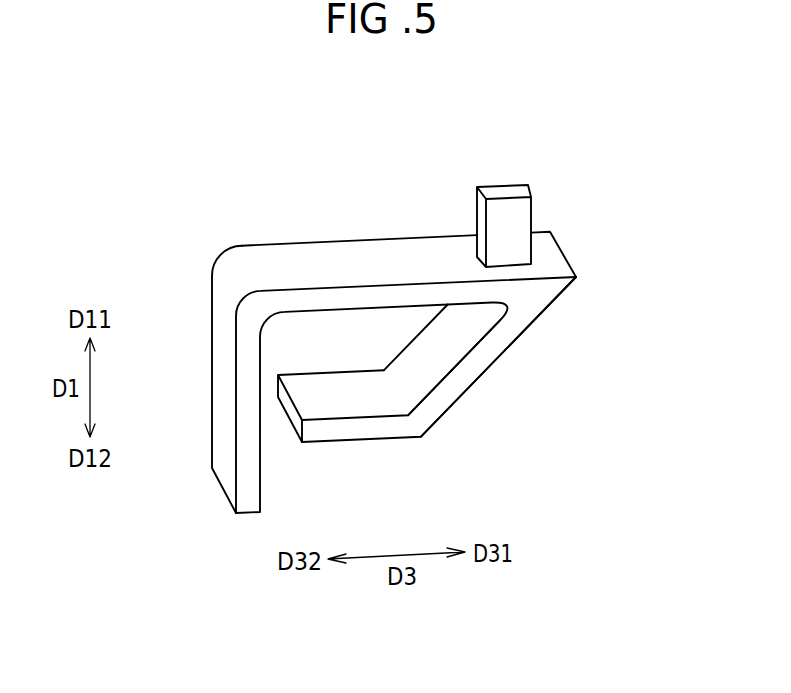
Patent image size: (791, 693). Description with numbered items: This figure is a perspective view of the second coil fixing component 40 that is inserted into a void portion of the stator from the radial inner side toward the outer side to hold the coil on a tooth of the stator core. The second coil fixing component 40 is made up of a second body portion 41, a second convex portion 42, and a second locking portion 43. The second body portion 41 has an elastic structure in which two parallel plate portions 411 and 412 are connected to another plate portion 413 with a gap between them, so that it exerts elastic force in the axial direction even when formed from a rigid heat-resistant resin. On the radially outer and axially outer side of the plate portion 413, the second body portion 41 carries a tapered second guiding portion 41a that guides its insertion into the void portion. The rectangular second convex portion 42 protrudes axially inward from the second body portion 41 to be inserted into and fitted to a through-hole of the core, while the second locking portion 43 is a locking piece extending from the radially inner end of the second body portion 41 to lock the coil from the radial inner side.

The second coil fixing component 40 is at (593, 152).
The second body portion 41 is at (337, 393).
The plate portion 411 is at (265, 258).
The plate portion 412 is at (355, 433).
The plate portion 413 is at (473, 373).
The second guiding portion 41a is at (520, 337).
The second convex portion 42 is at (500, 192).
The second locking portion 43 is at (220, 382).